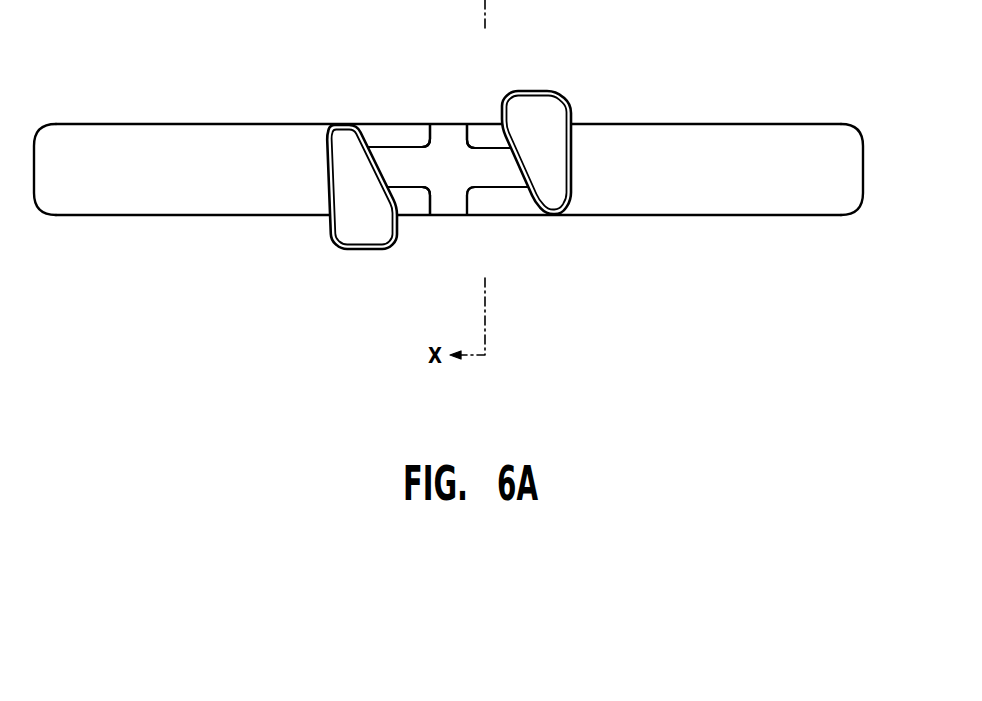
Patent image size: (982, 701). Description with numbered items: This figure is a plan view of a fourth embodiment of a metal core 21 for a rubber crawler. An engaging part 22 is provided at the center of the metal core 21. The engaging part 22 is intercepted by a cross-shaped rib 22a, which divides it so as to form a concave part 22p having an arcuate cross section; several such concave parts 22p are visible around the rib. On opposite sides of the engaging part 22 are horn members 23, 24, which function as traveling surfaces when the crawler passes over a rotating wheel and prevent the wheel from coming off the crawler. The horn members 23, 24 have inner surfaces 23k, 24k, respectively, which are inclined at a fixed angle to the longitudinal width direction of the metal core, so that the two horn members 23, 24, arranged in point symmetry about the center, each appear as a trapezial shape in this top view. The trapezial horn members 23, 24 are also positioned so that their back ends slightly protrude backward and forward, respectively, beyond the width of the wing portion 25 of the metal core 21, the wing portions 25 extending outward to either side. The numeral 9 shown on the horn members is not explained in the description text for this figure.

The clip member 9 is at (537, 87).
The metal core 21 is at (682, 90).
The engaging part 22 is at (438, 142).
The cross-shaped rib 22a is at (412, 170).
The concave part 22p is at (410, 135).
The horn member 23 is at (548, 150).
The inner surface 23k is at (492, 142).
The horn member 24 is at (357, 187).
The inner surface 24k is at (408, 200).
The wing portion 25 is at (148, 198).